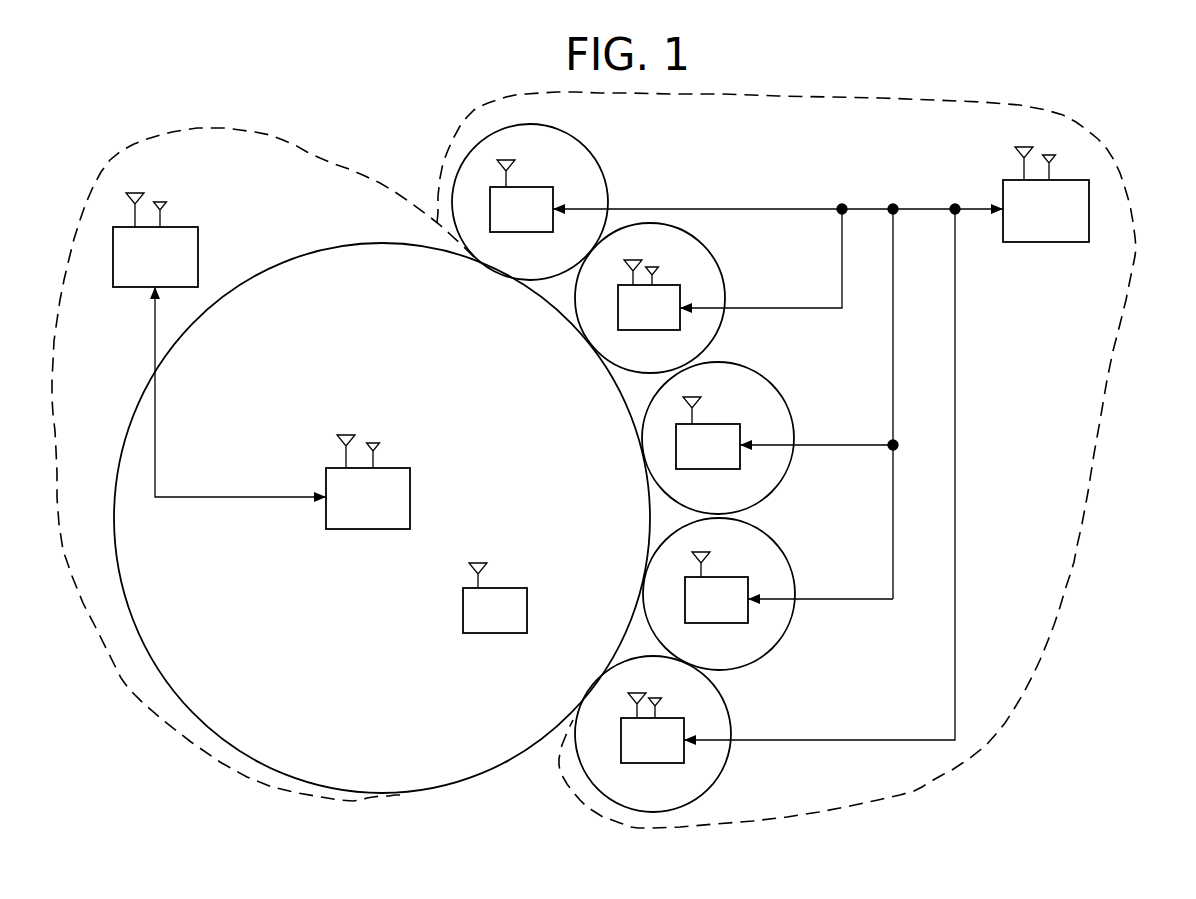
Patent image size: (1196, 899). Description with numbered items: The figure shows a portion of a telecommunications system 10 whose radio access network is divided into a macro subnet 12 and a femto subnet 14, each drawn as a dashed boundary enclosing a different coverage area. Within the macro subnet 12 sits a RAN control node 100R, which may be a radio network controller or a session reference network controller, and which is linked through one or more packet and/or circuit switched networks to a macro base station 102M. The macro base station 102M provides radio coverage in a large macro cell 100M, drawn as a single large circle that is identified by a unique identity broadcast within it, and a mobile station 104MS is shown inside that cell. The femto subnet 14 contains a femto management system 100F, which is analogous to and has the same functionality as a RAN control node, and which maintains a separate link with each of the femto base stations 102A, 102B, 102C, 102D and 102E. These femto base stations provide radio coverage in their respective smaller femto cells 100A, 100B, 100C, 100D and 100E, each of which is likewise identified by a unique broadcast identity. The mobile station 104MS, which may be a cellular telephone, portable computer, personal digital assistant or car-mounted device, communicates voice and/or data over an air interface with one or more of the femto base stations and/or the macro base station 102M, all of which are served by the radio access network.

The telecommunications system 10 is at (1161, 760).
The macro subnet 12 is at (283, 133).
The femto subnet 14 is at (1089, 524).
The RAN control node 100R is at (198, 245).
The macro cell 100M is at (365, 778).
The macro base station 102M is at (413, 498).
The mobile station 104MS is at (462, 610).
The femto cell 100E is at (603, 175).
The femto base station 102E is at (530, 187).
The femto cell 100A is at (722, 262).
The femto base station 102A is at (627, 332).
The femto cell 100B is at (772, 383).
The femto base station 102B is at (717, 407).
The femto cell 100C is at (787, 632).
The femto base station 102C is at (683, 603).
The femto cell 100D is at (721, 702).
The femto base station 102D is at (640, 763).
The femto management system 100F is at (1050, 242).